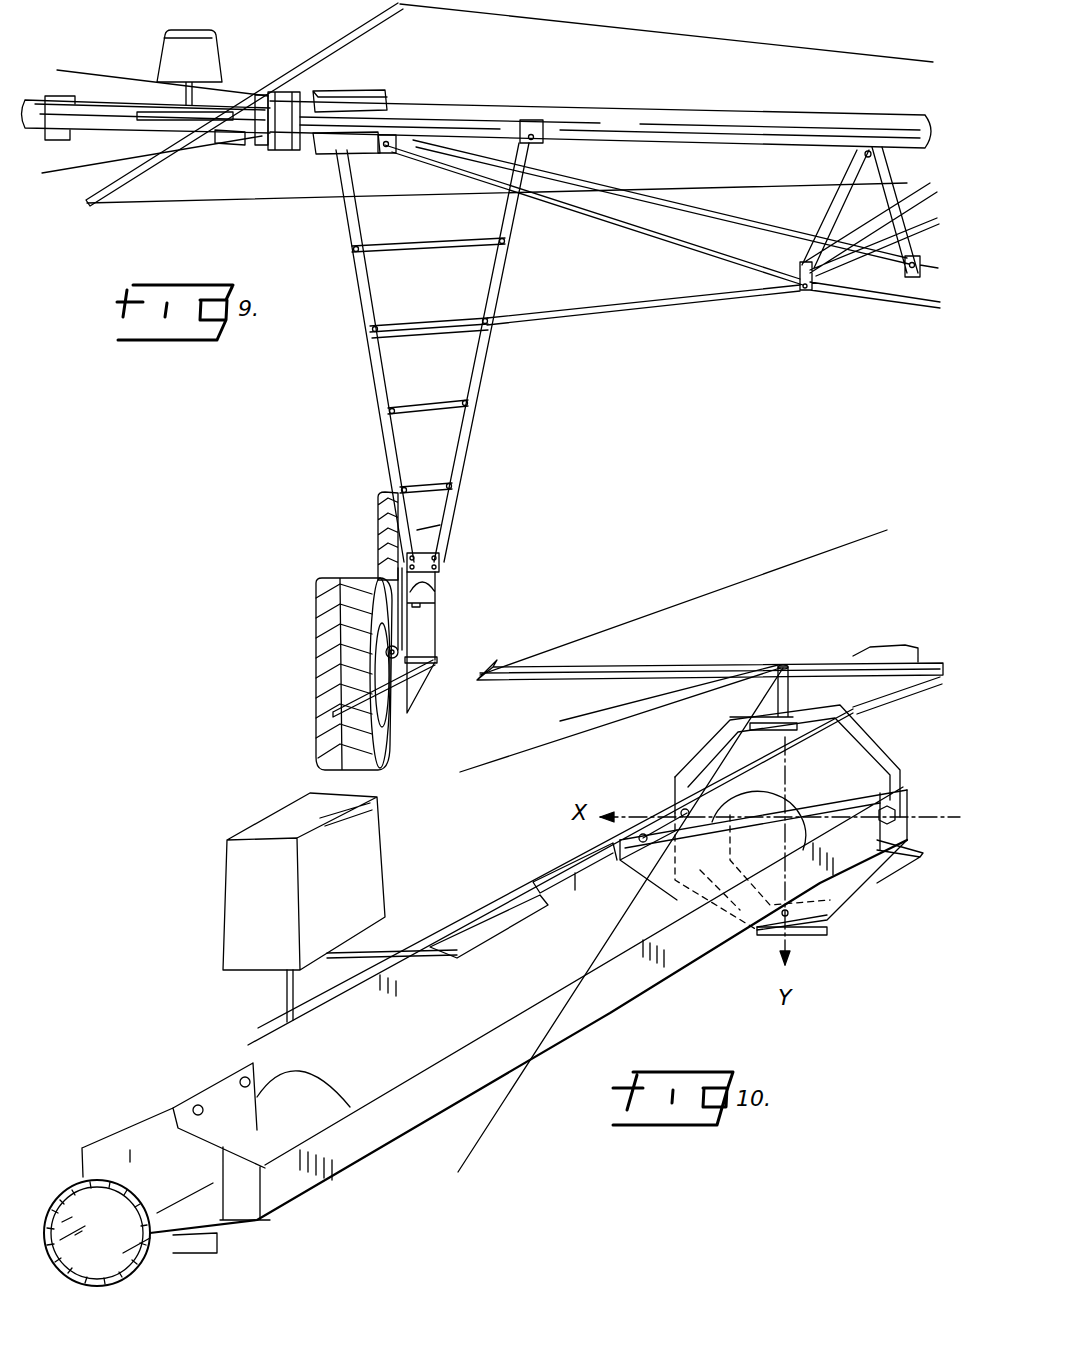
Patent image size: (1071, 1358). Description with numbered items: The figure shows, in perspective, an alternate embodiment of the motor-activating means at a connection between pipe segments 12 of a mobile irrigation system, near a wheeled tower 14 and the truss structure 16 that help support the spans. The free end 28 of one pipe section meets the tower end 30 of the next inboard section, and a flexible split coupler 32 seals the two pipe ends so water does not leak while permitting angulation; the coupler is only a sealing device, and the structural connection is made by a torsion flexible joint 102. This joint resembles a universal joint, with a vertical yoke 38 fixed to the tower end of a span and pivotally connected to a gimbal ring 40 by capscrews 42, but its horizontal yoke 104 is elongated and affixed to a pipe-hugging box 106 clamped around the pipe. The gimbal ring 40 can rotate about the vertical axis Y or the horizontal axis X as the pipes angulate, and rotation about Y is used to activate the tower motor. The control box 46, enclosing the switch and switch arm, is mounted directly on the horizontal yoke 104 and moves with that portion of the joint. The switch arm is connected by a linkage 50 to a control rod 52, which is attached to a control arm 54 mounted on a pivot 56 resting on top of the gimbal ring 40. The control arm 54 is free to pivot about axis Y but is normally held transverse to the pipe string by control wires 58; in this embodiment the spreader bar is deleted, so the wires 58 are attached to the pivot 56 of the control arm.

In FIG. 9, the pipe segment 12 is at (762, 92).
In FIG. 9, the wheeled tower 14 is at (372, 372).
In FIG. 9, the truss structure 16 is at (758, 296).
In FIG. 9, the free end 28 is at (132, 106).
In FIG. 10, the free end 28 is at (385, 1060).
In FIG. 9, the tower end 30 is at (462, 86).
In FIG. 9, the flexible split coupler 32 is at (284, 152).
In FIG. 9, the vertical yoke 38 is at (316, 96).
In FIG. 10, the vertical yoke 38 is at (890, 654).
In FIG. 10, the gimbal ring 40 is at (840, 914).
In FIG. 9, the capscrew 42 is at (272, 128).
In FIG. 10, the capscrew 42 is at (893, 807).
In FIG. 9, the control box 46 is at (192, 34).
In FIG. 10, the control box 46 is at (375, 850).
In FIG. 10, the linkage 50 is at (385, 950).
In FIG. 9, the control rod 52 is at (215, 112).
In FIG. 10, the control rod 52 is at (497, 930).
In FIG. 9, the control arm 54 is at (350, 46).
In FIG. 10, the control arm 54 is at (620, 680).
In FIG. 10, the pivot 56 is at (790, 690).
In FIG. 9, the control wire 58 is at (108, 92).
In FIG. 10, the control wire 58 is at (783, 540).
In FIG. 10, the torsion flexible joint 102 is at (611, 1020).
In FIG. 9, the horizontal yoke 104 is at (110, 122).
In FIG. 10, the horizontal yoke 104 is at (260, 1043).
In FIG. 9, the pipe-hugging box 106 is at (60, 140).
In FIG. 10, the pipe-hugging box 106 is at (140, 1110).